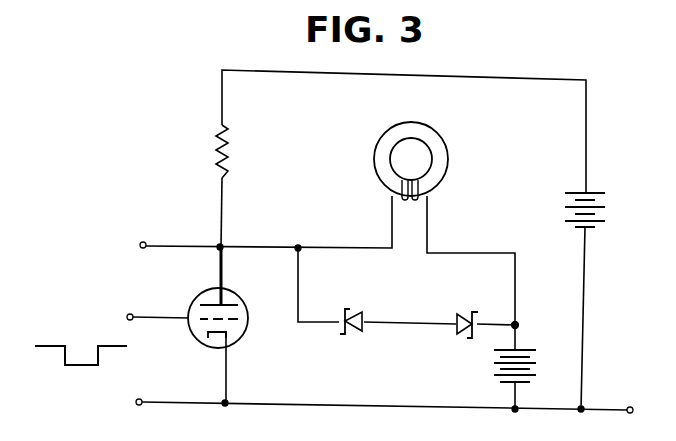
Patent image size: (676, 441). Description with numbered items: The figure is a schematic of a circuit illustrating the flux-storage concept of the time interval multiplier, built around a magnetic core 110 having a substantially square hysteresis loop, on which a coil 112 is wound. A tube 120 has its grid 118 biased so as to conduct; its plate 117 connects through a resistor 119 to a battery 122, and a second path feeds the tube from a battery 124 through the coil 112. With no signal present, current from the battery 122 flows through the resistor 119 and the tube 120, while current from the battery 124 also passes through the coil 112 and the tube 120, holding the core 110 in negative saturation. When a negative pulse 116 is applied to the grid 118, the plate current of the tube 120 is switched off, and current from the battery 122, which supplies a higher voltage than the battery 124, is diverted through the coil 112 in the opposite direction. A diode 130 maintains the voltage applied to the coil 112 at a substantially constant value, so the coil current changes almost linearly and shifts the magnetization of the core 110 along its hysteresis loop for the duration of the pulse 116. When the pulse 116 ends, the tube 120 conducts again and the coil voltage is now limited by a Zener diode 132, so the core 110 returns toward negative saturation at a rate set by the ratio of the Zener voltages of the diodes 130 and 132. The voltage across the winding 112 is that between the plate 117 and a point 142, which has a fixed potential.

The magnetic core 110 is at (446, 150).
The coil 112 is at (424, 198).
The negative pulse 116 is at (75, 366).
The plate 117 is at (226, 297).
The grid 118 is at (230, 323).
The resistor 119 is at (227, 154).
The tube 120 is at (204, 292).
The battery 122 is at (605, 210).
The battery 124 is at (534, 364).
The diode 130 is at (358, 331).
The Zener diode 132 is at (474, 338).
The point 142 is at (518, 323).